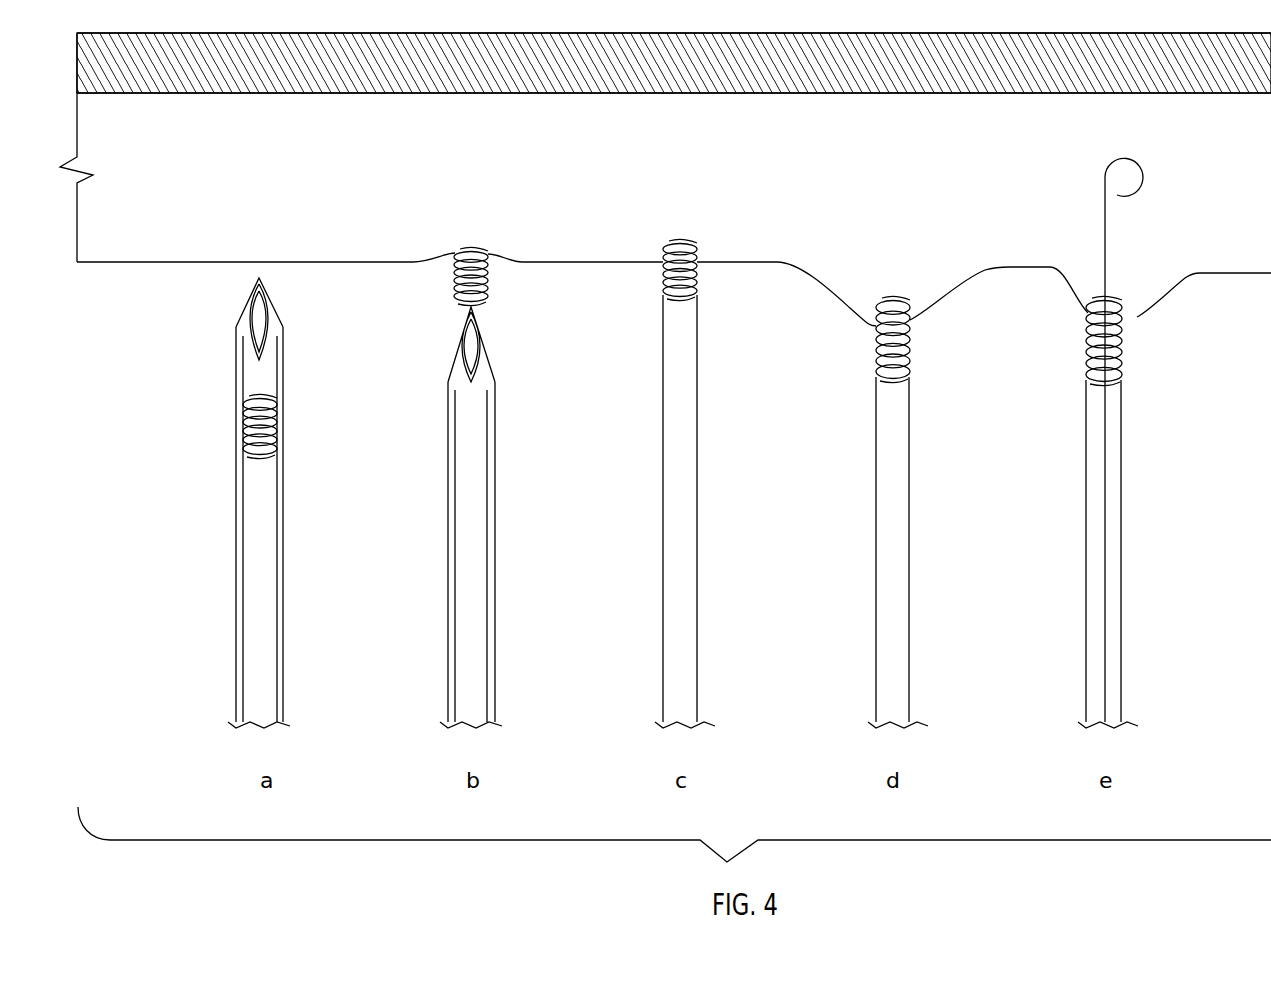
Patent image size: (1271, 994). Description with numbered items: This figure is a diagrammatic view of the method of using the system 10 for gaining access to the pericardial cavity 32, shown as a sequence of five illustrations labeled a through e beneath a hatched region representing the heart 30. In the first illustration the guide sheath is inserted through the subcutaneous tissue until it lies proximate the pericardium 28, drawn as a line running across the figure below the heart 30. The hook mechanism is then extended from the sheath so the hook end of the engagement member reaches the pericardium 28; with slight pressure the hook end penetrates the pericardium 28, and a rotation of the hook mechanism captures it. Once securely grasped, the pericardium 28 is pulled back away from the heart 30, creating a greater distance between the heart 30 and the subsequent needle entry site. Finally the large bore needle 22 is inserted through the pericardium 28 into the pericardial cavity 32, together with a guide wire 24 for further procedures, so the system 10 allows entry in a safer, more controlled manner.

The system 10 is at (218, 611).
The large bore needle 22 is at (1121, 437).
The guide wire 24 is at (1106, 238).
The pericardium 28 is at (322, 262).
The heart 30 is at (248, 93).
The pericardial cavity 32 is at (1079, 201).